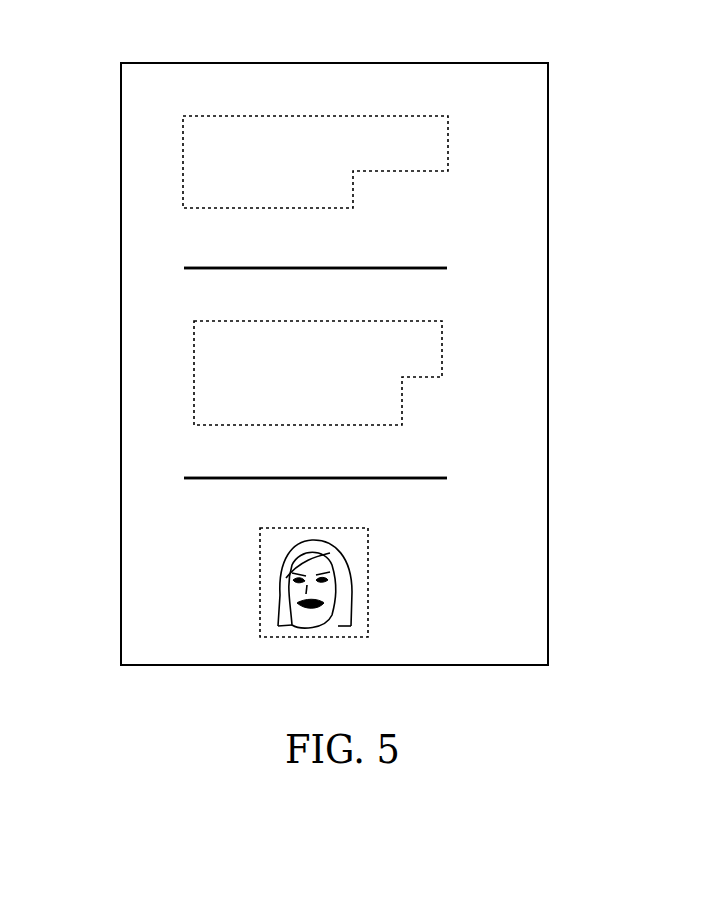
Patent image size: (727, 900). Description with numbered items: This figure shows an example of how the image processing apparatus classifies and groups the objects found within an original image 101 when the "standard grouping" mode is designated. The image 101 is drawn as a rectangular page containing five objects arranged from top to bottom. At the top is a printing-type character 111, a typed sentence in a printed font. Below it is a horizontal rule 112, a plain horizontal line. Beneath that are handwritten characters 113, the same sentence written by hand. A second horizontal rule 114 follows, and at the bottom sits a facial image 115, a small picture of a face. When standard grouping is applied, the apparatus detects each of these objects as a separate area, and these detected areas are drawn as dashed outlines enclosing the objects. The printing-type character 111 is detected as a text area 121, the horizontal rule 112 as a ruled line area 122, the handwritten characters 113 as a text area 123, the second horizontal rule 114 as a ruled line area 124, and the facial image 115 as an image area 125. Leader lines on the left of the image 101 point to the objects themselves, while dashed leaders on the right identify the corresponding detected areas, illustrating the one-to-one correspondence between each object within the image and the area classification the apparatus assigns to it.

The image 101 is at (497, 63).
The printing-type character 111 is at (173, 159).
The horizontal rule 112 is at (173, 262).
The handwritten characters 113 is at (173, 369).
The horizontal rule 114 is at (173, 469).
The facial image 115 is at (252, 575).
The text area 121 is at (448, 146).
The ruled line area 122 is at (447, 268).
The text area 123 is at (442, 372).
The ruled line area 124 is at (447, 478).
The image area 125 is at (368, 578).